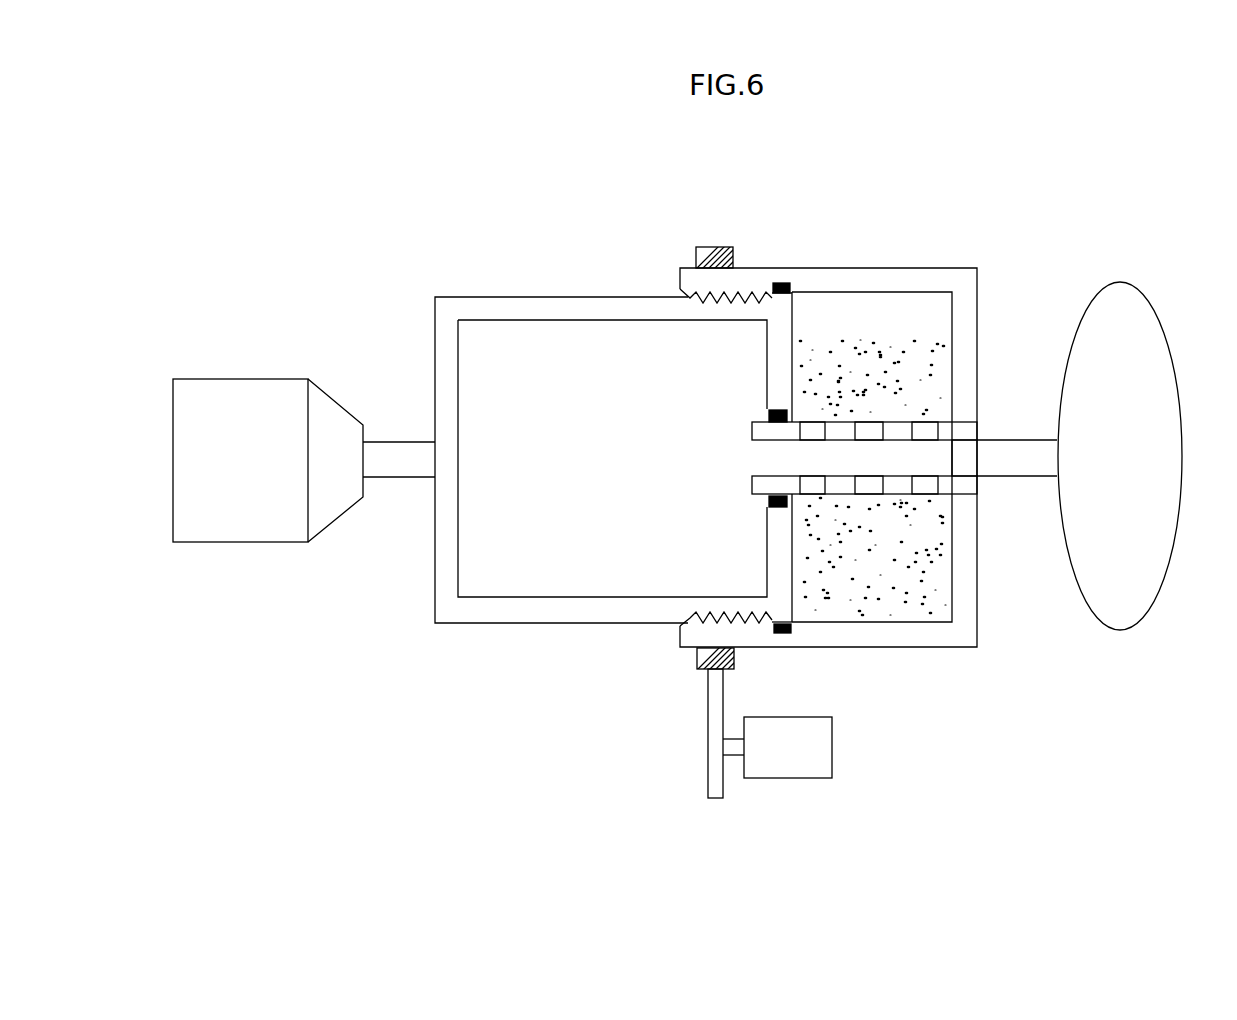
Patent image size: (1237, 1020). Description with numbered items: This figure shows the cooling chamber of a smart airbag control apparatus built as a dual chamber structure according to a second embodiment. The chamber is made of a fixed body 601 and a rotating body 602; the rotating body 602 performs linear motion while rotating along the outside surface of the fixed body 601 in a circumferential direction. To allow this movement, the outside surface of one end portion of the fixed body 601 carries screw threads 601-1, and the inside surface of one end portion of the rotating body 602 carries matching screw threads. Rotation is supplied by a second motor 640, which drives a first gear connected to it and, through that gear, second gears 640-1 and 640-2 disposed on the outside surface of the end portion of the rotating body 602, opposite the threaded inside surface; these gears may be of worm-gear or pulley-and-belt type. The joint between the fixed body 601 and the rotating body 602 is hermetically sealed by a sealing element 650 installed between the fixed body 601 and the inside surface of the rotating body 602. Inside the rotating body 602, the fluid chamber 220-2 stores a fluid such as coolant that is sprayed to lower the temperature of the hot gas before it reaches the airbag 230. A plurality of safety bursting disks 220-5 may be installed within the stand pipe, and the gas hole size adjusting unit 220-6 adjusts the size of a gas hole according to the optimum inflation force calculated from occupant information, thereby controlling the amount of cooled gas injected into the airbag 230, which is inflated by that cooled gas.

The fixed body 601 is at (437, 608).
The screw threads 601-1 is at (686, 286).
The rotating body 602 is at (978, 619).
The second motor 640 is at (832, 746).
The second gear 640-1 is at (697, 658).
The second gear 640-2 is at (710, 248).
The sealing element 650 is at (791, 627).
The fluid chamber 220-2 is at (848, 365).
The safety bursting disk 220-5 is at (923, 430).
The gas hole size adjusting unit 220-6 is at (967, 455).
The airbag 230 is at (1147, 355).